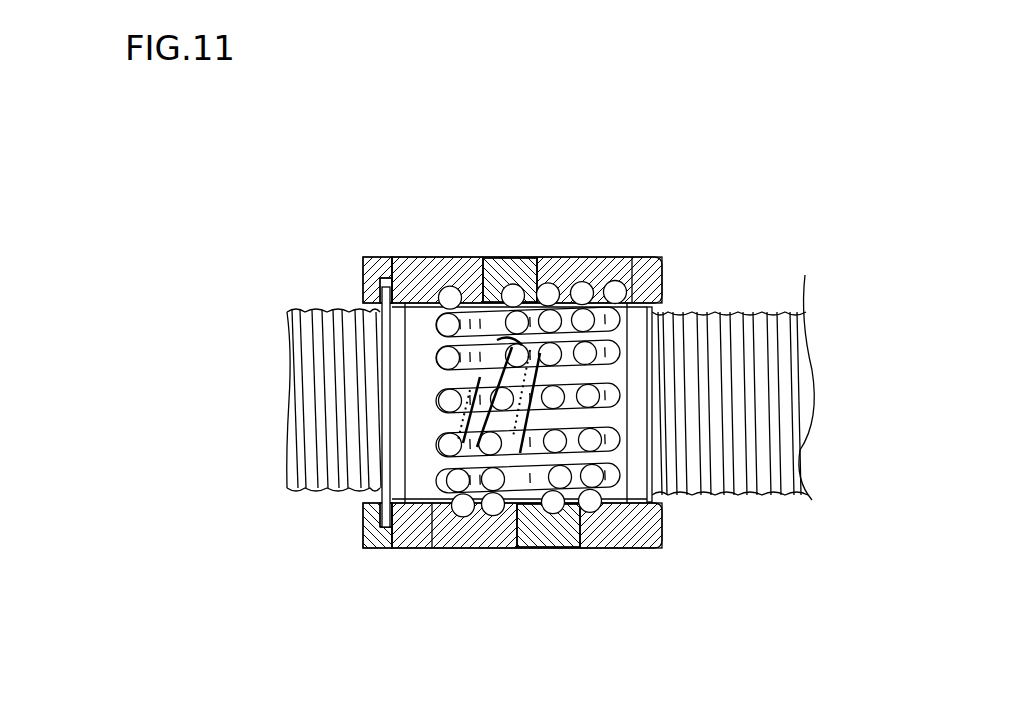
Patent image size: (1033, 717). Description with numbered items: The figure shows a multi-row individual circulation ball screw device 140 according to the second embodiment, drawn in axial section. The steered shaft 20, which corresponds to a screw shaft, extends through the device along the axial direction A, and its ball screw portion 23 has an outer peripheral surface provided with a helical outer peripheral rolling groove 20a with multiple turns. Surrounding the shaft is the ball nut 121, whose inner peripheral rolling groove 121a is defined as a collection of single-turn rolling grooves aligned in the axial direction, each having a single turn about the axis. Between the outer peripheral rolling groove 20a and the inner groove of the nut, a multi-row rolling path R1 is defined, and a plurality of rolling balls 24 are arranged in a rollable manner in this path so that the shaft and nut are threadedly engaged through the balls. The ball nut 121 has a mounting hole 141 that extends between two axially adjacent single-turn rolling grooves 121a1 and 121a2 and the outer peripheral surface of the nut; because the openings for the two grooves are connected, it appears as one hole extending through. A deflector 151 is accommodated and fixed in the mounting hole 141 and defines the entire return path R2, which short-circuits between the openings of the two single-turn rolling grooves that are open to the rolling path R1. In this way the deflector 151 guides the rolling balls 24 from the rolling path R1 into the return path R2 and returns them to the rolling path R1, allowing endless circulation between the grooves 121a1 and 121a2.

The axial direction A is at (245, 175).
The steered shaft 20 is at (551, 319).
The outer peripheral rolling groove 20a is at (676, 312).
The ball screw portion 23 is at (748, 305).
The rolling balls 24 is at (438, 548).
The ball nut 121 is at (574, 257).
The inner peripheral rolling groove 121a is at (622, 257).
The single-turn rolling groove 121a1 is at (475, 548).
The single-turn rolling groove 121a2 is at (524, 257).
The multi-row individual circulation ball screw device 140 is at (330, 253).
The mounting hole 141 is at (477, 257).
The deflector 151 is at (430, 257).
The rolling path R1 is at (502, 548).
The return path R2 is at (548, 380).